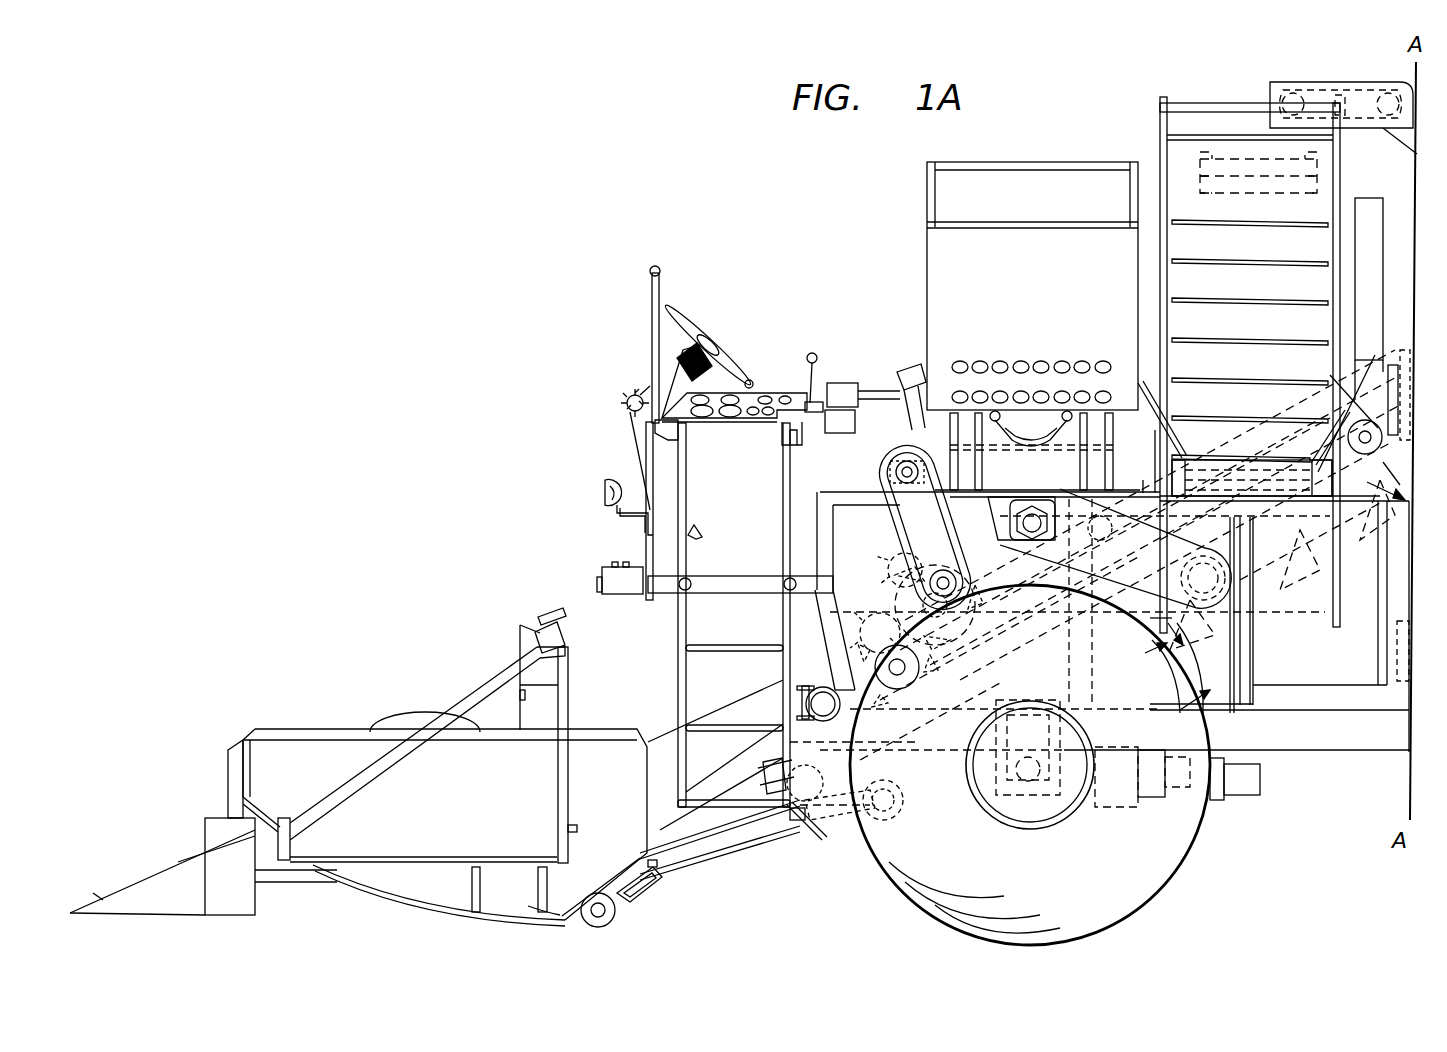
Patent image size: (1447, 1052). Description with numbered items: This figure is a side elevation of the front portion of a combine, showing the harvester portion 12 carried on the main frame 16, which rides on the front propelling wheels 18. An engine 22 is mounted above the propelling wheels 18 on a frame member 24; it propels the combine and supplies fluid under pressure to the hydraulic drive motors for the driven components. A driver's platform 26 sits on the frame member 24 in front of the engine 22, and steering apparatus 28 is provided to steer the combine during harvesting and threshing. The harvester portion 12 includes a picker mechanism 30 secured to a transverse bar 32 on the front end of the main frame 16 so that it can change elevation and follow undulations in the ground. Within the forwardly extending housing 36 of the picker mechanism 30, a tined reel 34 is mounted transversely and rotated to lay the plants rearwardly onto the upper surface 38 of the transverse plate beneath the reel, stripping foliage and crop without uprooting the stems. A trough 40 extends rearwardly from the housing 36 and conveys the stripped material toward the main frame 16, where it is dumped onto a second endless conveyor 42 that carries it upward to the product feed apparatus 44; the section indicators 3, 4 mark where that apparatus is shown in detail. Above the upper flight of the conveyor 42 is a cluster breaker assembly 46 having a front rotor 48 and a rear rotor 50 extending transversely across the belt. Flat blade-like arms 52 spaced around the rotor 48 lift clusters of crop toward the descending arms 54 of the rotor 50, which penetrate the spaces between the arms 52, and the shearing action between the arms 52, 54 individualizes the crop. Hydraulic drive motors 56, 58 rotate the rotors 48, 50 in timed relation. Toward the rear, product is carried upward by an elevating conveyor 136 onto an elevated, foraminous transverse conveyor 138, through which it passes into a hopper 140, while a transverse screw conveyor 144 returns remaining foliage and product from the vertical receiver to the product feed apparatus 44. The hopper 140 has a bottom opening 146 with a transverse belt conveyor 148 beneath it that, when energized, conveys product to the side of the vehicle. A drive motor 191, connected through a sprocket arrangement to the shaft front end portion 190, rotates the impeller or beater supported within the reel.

The section line 3- 3 is at (1299, 587).
The section line 4- 4 is at (1169, 685).
The harvester portion 12 is at (878, 366).
The main frame 16 is at (1358, 742).
The front propelling wheels 18 is at (1185, 840).
The engine 22 is at (1048, 178).
The frame member 24 is at (860, 492).
The driver's platform 26 is at (760, 392).
The steering apparatus 28 is at (700, 320).
The picker mechanism 30 is at (395, 712).
The transverse bar 32 is at (822, 698).
The tined reel 34 is at (410, 712).
The forwardly extending housing 36 is at (606, 740).
The upper surface 38 is at (533, 908).
The trough 40 is at (662, 730).
The second endless conveyor 42 is at (912, 780).
The product feed apparatus 44 is at (1268, 570).
The cluster breaker assembly 46 is at (895, 603).
The front rotor 48 is at (918, 672).
The rear rotor 50 is at (932, 566).
The blade like arms 52 is at (878, 633).
The blade like arms 54 is at (893, 566).
The drive means 56 is at (1105, 538).
The drive means 58 is at (912, 468).
The elevating conveyor 136 is at (1323, 88).
The elevated transverse conveyor 138 is at (1318, 163).
The hopper 140 is at (1352, 198).
The transverse screw conveyor 144 is at (1352, 430).
The bottom opening 146 is at (1318, 446).
The transverse belt conveyor 148 is at (1236, 470).
The shaft front end portion 190 is at (1368, 370).
The drive motor 191 is at (1340, 385).